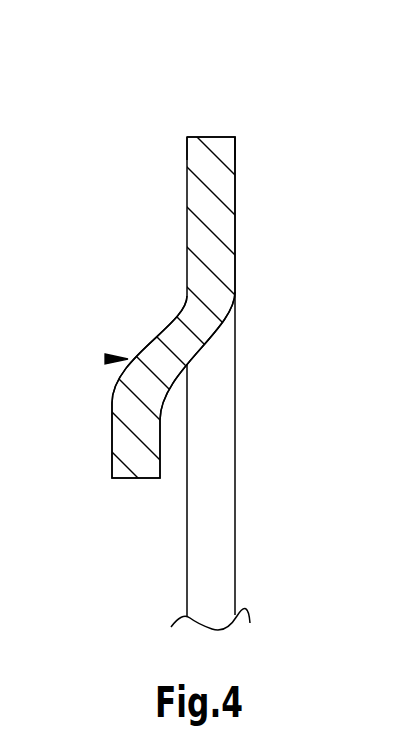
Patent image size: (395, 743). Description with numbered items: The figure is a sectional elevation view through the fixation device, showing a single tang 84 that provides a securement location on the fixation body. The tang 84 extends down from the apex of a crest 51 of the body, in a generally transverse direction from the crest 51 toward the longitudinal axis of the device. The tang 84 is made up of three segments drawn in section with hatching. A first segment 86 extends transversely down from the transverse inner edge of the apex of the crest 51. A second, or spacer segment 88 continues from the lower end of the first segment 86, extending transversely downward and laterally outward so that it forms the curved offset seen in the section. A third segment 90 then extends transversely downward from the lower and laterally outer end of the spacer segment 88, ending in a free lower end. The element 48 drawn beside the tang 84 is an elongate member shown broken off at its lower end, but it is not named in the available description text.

The strip 48 is at (235, 457).
The crest 51 is at (208, 137).
The tang 84 is at (106, 359).
The first segment 86 is at (187, 232).
The spacer segment 88 is at (153, 330).
The third segment 90 is at (112, 415).